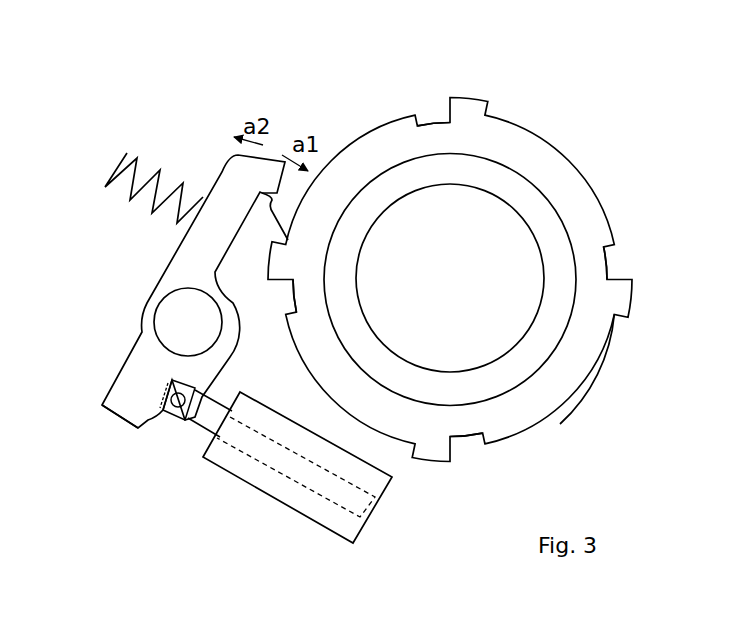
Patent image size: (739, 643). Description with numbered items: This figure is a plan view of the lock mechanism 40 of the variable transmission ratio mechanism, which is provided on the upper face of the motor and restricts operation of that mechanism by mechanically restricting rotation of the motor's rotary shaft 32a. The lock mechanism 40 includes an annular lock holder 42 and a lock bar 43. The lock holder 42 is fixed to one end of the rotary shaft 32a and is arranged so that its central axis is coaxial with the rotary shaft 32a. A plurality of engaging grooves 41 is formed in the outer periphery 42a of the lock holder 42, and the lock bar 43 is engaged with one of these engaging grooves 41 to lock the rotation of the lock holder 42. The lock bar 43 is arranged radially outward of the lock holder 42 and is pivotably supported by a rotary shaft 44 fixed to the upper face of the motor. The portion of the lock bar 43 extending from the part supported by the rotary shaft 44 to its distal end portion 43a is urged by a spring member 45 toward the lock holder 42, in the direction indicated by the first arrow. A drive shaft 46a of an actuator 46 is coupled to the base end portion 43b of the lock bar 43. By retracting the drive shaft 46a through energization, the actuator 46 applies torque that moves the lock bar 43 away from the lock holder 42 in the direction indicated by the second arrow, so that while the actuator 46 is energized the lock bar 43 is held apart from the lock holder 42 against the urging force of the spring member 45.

The rotary shaft 32a is at (478, 297).
The lock mechanism 40 is at (178, 120).
The engaging grooves 41 is at (433, 123).
The lock holder 42 is at (637, 289).
The outer periphery 42a is at (608, 347).
The lock bar 43 is at (163, 267).
The distal end portion 43a is at (290, 243).
The base end portion 43b is at (117, 418).
The rotary shaft 44 is at (204, 336).
The spring member 45 is at (110, 178).
The actuator 46 is at (270, 493).
The drive shaft 46a is at (197, 430).